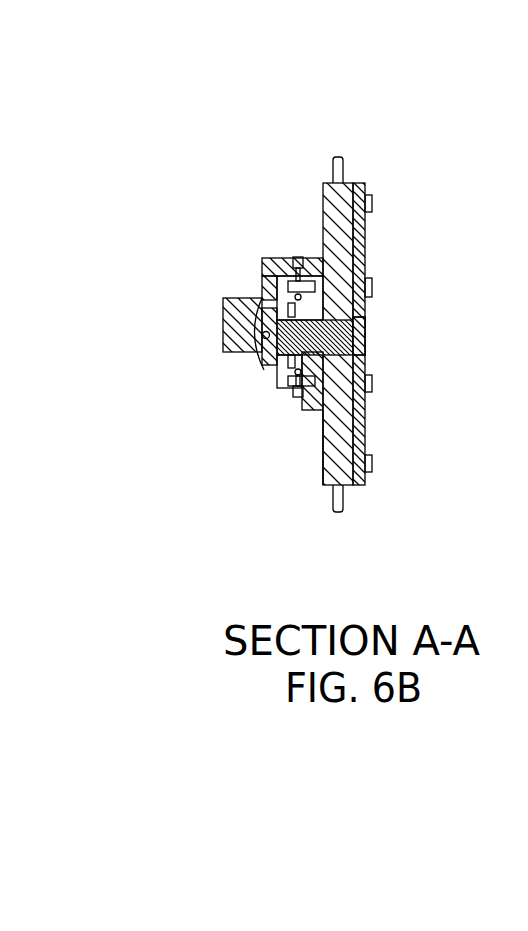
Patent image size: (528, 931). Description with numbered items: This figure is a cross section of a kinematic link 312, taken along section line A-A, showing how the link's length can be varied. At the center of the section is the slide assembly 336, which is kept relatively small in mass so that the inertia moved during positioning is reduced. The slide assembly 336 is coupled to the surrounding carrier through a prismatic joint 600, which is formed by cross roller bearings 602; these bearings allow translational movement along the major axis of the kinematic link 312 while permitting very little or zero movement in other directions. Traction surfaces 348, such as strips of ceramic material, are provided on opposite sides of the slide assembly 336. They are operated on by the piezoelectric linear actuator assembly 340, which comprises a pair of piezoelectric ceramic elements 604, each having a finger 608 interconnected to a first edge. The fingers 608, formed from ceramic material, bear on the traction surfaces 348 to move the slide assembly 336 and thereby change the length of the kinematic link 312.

The kinematic link 312 is at (357, 178).
The slide assembly 336 is at (256, 309).
The piezoelectric linear actuator assembly 340 is at (332, 439).
The traction surface 348 is at (347, 322).
The prismatic joint 600 is at (293, 292).
The cross roller bearings 602 is at (292, 277).
The piezoelectric ceramic element 604 is at (324, 254).
The finger 608 is at (360, 305).